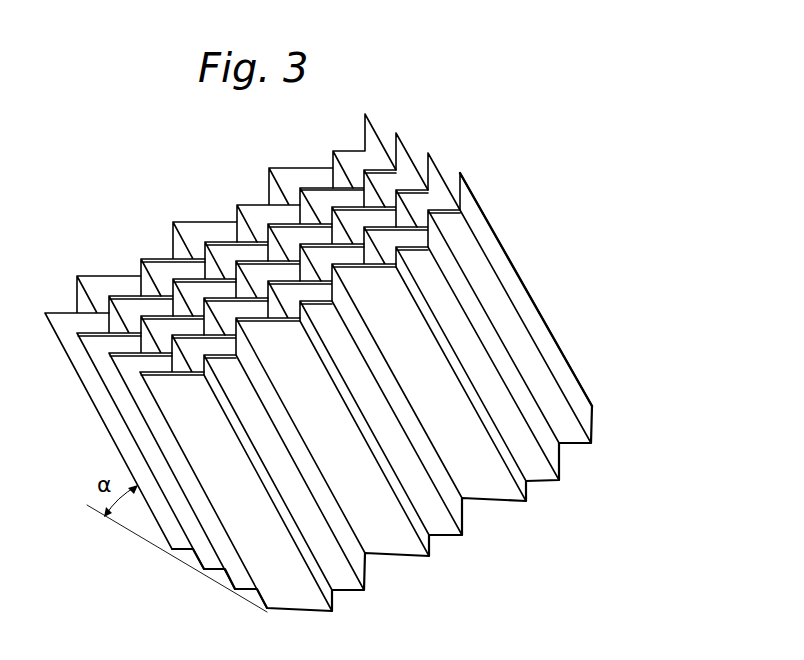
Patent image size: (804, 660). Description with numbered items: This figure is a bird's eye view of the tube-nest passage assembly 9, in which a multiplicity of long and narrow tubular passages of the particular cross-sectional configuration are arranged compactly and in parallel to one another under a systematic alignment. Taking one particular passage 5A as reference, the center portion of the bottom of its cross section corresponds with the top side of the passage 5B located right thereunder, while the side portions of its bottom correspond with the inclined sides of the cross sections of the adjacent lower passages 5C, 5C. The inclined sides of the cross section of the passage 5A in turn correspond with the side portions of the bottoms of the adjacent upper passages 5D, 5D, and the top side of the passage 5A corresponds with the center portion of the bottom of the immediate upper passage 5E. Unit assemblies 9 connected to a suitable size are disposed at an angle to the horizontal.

The tube-nest passage assembly 9 is at (318, 353).
The particular passage 5A is at (280, 238).
The passage located right thereunder 5B is at (252, 213).
The adjacent lower passage 5C is at (225, 253).
The adjacent upper passage 5D is at (253, 277).
The immediate upper passage 5E is at (337, 248).